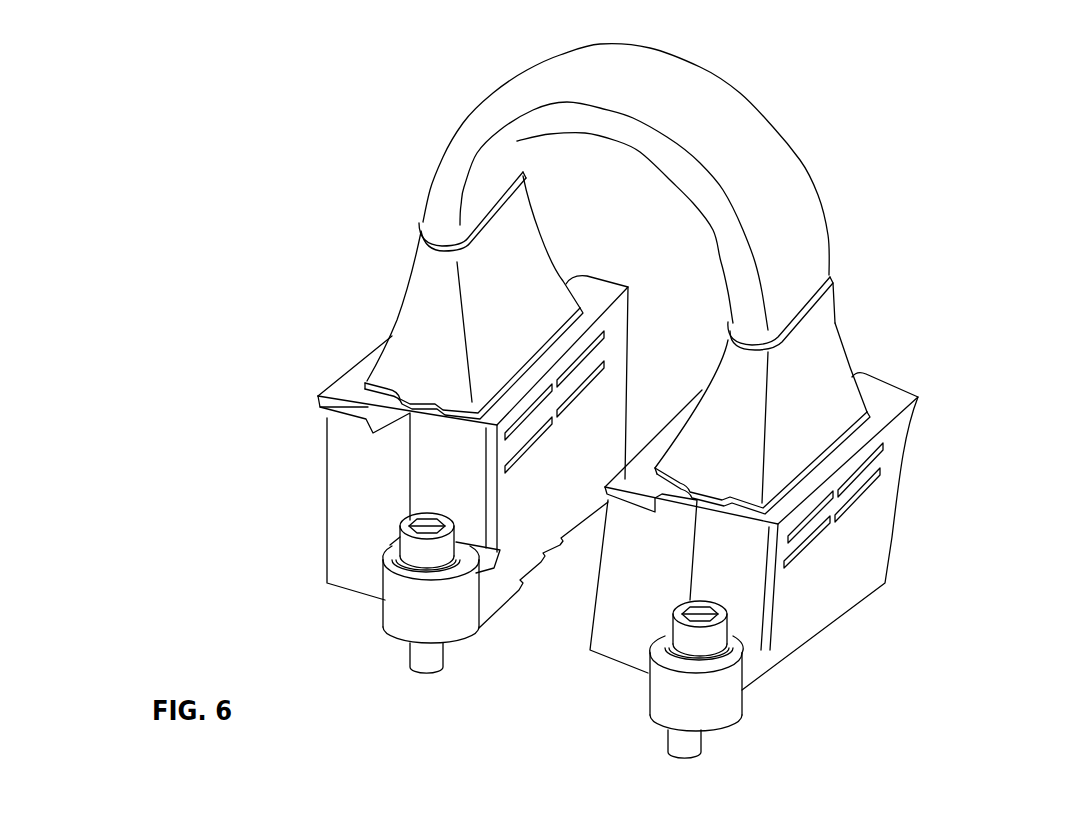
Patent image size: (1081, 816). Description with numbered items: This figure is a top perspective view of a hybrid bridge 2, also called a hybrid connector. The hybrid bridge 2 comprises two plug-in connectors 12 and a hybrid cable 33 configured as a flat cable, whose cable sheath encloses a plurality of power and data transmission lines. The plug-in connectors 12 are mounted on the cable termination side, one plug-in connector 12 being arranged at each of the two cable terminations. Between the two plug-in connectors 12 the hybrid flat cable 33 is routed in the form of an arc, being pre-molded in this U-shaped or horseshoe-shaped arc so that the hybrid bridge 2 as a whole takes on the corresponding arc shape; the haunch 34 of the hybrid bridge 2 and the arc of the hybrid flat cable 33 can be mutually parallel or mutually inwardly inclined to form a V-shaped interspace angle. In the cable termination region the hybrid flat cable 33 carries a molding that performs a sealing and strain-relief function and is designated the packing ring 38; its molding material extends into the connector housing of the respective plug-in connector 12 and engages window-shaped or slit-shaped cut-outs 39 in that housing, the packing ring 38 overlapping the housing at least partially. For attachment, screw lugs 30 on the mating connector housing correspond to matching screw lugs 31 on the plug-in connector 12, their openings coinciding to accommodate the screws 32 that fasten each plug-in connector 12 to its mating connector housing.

The hybrid bridge 2 is at (980, 205).
The plug-in connector 12 is at (355, 493).
The screw lug 30 is at (400, 607).
The screw lug 31 is at (667, 700).
The screw 32 is at (423, 650).
The hybrid flat cable 33 is at (795, 205).
The haunch 34 is at (455, 165).
The packing ring 38 is at (420, 297).
The cut-outs 39 is at (868, 489).